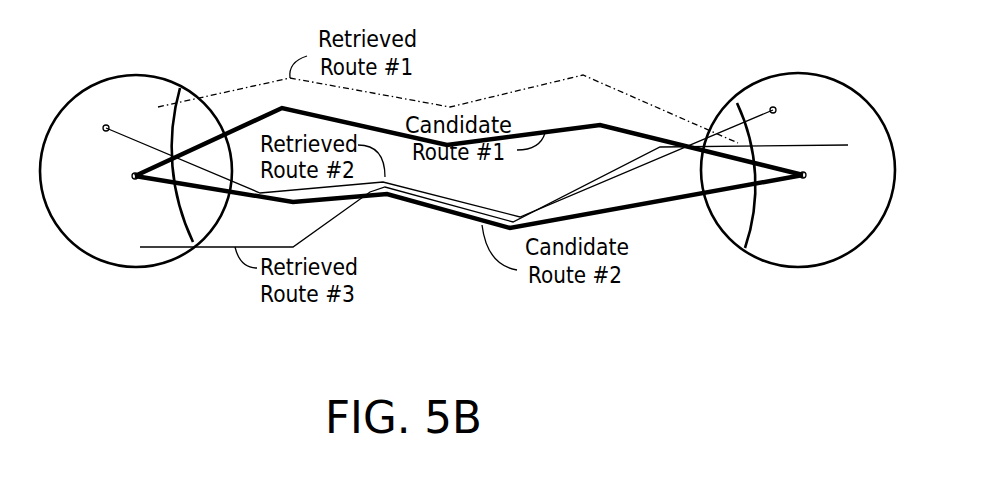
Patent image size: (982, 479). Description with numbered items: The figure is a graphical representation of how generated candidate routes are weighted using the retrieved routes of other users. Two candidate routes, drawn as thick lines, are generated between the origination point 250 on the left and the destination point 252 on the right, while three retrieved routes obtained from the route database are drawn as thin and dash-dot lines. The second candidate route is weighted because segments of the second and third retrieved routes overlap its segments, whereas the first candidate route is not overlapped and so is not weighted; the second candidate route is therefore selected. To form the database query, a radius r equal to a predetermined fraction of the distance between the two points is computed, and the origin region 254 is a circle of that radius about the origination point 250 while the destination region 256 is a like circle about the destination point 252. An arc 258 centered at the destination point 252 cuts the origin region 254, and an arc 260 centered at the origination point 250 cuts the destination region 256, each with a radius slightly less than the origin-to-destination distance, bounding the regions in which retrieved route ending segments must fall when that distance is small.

The origination point 250 is at (96, 193).
The destination point 252 is at (836, 192).
The origin region 254 is at (136, 198).
The destination region 256 is at (798, 197).
The arc 258 is at (129, 128).
The arc 260 is at (799, 138).